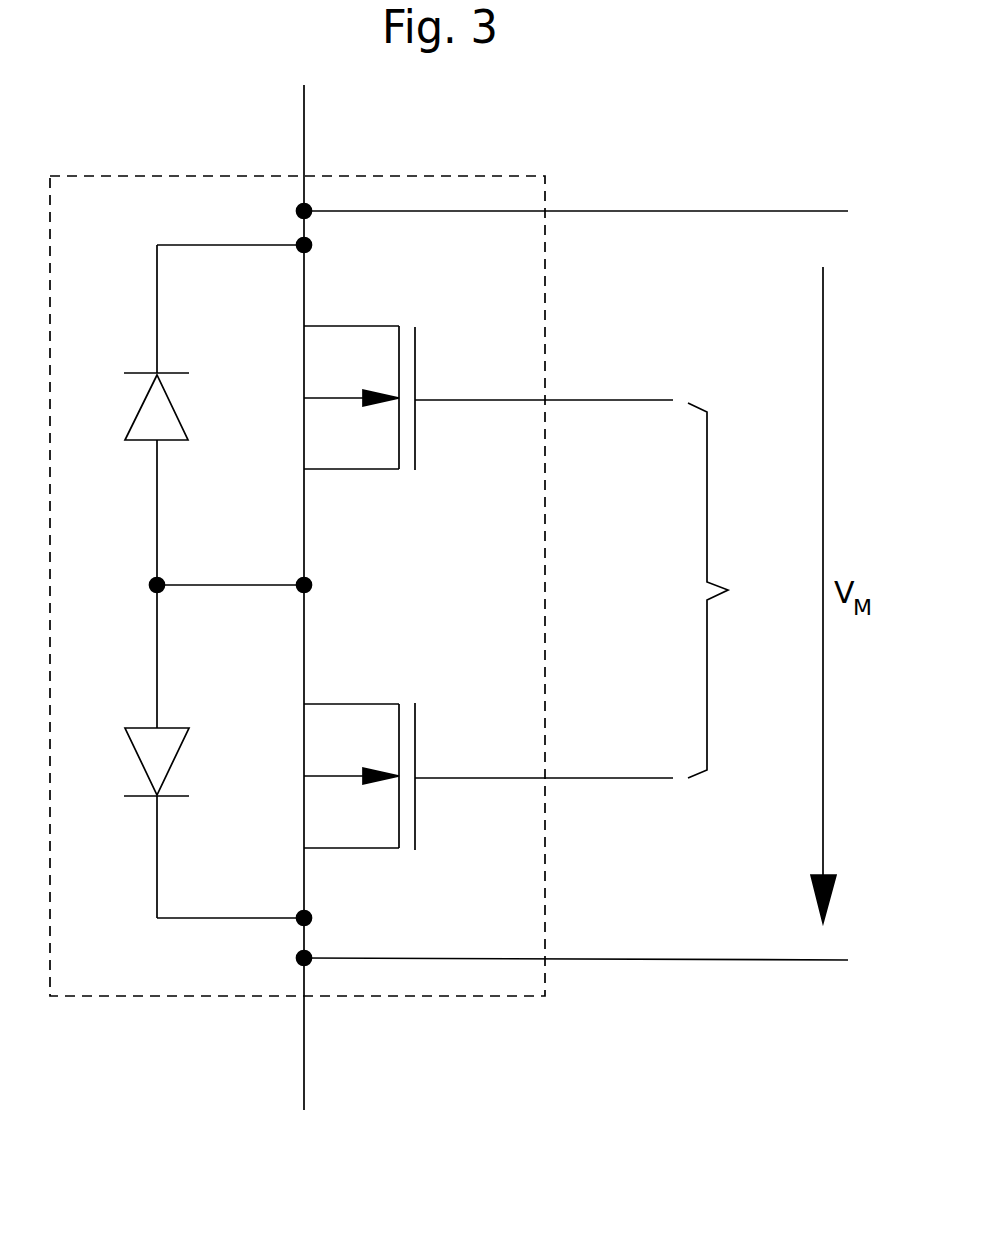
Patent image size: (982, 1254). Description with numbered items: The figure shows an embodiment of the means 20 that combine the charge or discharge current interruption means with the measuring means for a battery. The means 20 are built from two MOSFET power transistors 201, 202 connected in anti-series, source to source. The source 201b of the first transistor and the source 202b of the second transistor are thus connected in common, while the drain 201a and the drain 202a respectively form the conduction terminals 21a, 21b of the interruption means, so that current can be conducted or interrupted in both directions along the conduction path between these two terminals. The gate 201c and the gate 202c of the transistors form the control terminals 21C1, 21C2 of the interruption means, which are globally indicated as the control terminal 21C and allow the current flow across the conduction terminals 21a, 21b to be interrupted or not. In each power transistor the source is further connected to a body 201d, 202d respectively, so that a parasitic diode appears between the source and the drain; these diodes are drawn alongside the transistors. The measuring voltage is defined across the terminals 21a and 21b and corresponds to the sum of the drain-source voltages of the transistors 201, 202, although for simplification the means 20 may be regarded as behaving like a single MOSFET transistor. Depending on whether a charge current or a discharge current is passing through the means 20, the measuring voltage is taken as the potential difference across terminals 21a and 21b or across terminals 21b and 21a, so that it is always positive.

The means 20 is at (120, 138).
The conduction terminal 21a is at (334, 148).
The conduction terminal 21b is at (335, 1034).
The MOSFET power transistor 201 is at (416, 366).
The drain 201a is at (351, 307).
The source 201b is at (351, 486).
The gate 201c is at (480, 380).
The body 201d is at (343, 383).
The MOSFET power transistor 202 is at (416, 748).
The drain 202a is at (351, 868).
The source 202b is at (351, 686).
The gate 202c is at (480, 759).
The body 202d is at (343, 790).
The control terminal 21C1 is at (609, 382).
The control terminal 21C2 is at (609, 759).
The control terminal 21C is at (739, 590).